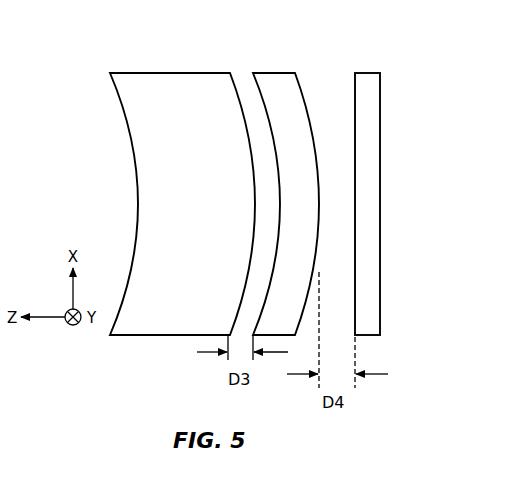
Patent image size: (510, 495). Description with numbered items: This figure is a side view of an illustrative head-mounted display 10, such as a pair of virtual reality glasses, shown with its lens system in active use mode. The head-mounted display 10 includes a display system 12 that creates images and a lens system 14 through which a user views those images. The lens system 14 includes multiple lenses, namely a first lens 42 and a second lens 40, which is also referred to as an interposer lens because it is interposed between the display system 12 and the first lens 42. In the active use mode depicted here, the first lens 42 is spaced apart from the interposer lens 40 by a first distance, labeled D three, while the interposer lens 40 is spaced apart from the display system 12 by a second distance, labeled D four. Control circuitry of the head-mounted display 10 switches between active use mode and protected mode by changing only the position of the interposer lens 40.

The head-mounted display 10 is at (424, 69).
The display system 12 is at (365, 73).
The lens system 14 is at (318, 50).
The interposer lens 40 is at (303, 106).
The first lens 42 is at (143, 120).